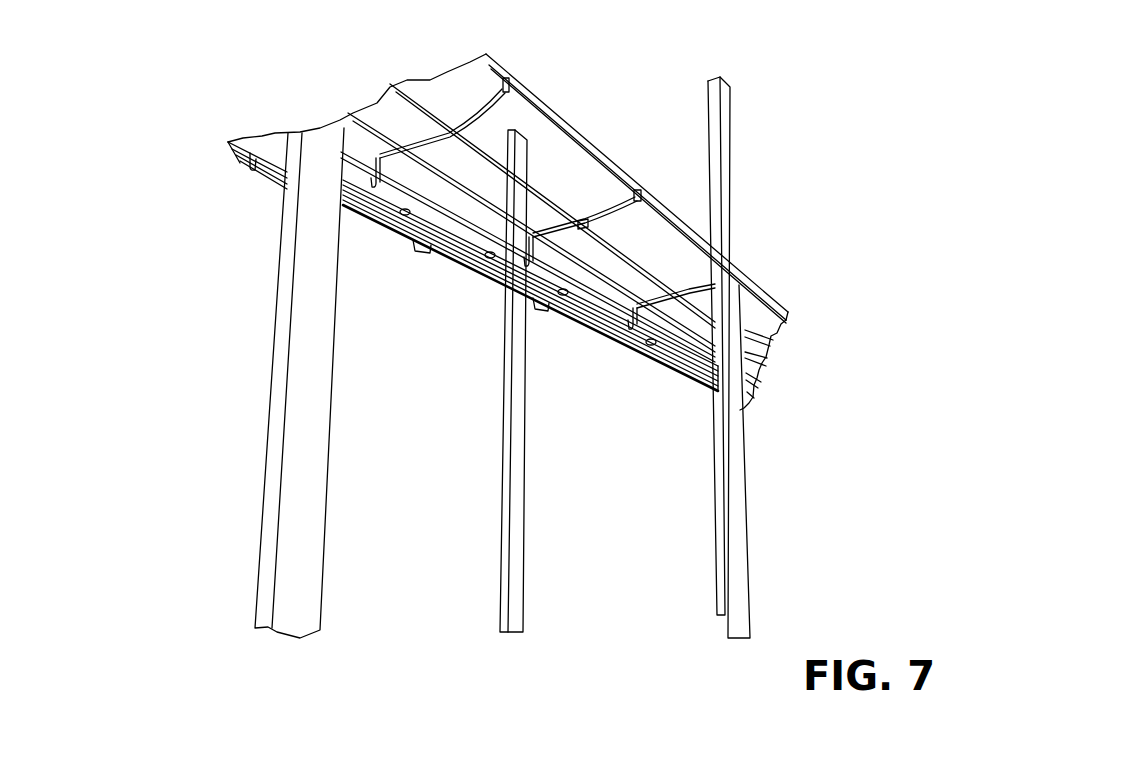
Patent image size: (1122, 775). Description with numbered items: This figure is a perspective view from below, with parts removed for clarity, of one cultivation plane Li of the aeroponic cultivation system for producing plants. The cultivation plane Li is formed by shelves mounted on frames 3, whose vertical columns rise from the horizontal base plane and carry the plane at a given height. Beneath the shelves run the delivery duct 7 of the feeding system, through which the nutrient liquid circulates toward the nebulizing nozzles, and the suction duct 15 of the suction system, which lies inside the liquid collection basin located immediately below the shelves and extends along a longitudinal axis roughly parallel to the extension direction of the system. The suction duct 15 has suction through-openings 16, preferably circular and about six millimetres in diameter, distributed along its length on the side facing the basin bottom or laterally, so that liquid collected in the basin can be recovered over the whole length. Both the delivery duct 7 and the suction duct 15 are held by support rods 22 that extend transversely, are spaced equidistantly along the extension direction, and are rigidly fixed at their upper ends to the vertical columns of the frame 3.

The frame 3 is at (710, 104).
The delivery duct 7 is at (543, 185).
The suction duct 15 is at (671, 352).
The suction through-openings 16 is at (405, 216).
The support rods 22 is at (460, 128).
The cultivation plane Li is at (772, 280).